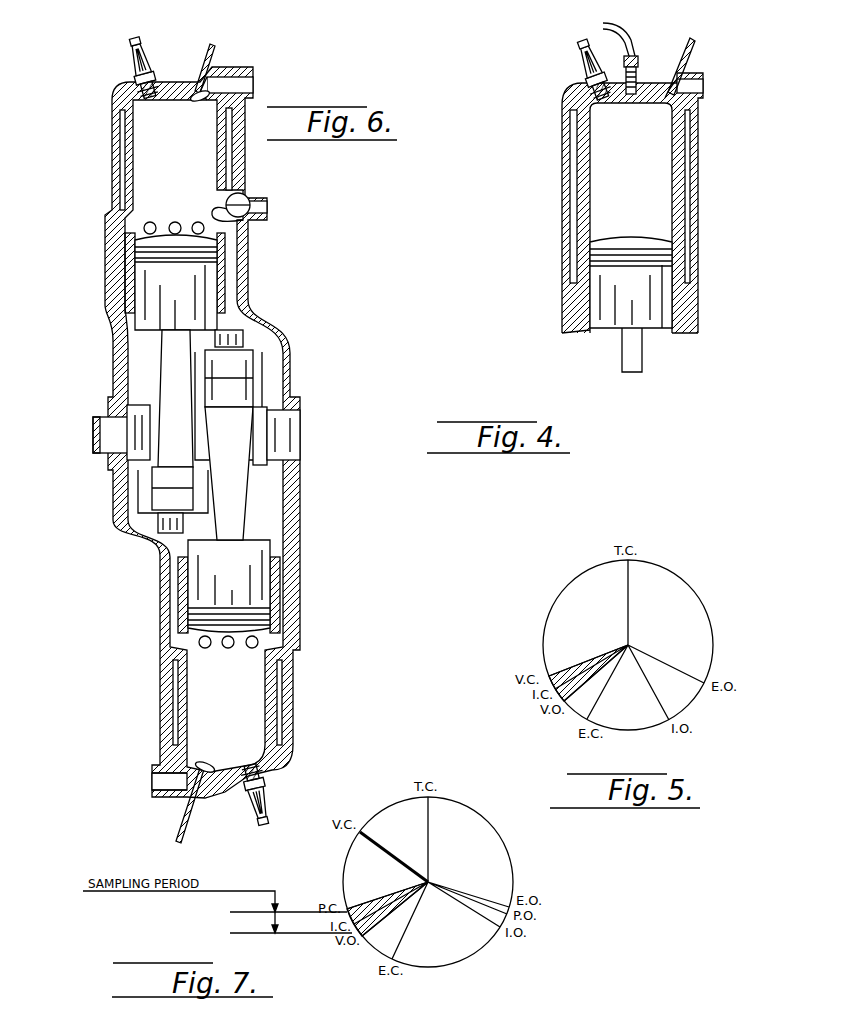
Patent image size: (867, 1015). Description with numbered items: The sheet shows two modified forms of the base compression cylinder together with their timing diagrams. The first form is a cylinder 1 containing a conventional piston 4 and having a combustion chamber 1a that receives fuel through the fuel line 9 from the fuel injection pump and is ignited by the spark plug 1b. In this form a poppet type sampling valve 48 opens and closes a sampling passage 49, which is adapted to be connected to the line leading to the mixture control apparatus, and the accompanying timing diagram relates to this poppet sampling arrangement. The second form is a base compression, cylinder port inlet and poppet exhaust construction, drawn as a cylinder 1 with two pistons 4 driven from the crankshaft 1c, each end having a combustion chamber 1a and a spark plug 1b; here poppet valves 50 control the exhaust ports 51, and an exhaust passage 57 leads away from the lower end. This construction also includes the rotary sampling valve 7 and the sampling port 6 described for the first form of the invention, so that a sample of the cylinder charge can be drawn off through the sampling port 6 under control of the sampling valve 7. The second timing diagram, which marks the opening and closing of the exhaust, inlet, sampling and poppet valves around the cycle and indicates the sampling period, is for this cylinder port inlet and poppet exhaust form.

In FIG. 6, the cylinder 1 is at (300, 586).
In FIG. 4, the cylinder 1 is at (685, 308).
In FIG. 6, the combustion chamber 1a is at (152, 163).
In FIG. 4, the combustion chamber 1a is at (653, 167).
In FIG. 6, the spark plug 1b is at (152, 56).
In FIG. 4, the spark plug 1b is at (587, 68).
In FIG. 6, the crankshaft 1c is at (290, 432).
In FIG. 6, the piston 4 is at (190, 295).
In FIG. 4, the piston 4 is at (653, 293).
In FIG. 6, the sampling port 6 is at (240, 230).
In FIG. 6, the rotary sampling valve 7 is at (243, 200).
In FIG. 4, the fuel line 9 is at (602, 27).
In FIG. 4, the poppet type sampling valve 48 is at (683, 66).
In FIG. 4, the sampling passage 49 is at (705, 85).
In FIG. 6, the poppet valves 50 is at (214, 72).
In FIG. 6, the exhaust ports 51 is at (237, 82).
In FIG. 6, the exhaust passage 57 is at (160, 785).